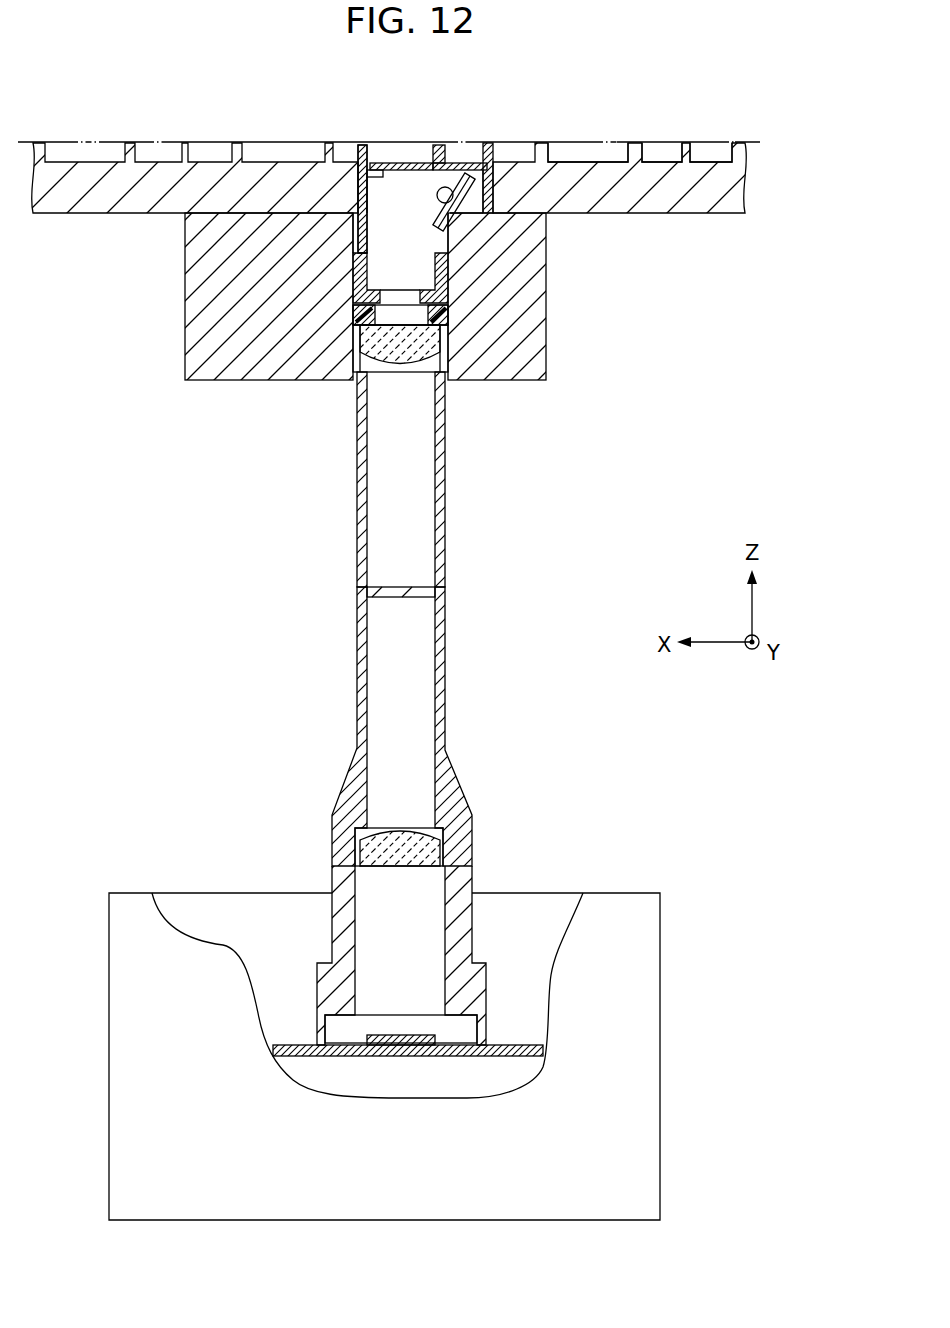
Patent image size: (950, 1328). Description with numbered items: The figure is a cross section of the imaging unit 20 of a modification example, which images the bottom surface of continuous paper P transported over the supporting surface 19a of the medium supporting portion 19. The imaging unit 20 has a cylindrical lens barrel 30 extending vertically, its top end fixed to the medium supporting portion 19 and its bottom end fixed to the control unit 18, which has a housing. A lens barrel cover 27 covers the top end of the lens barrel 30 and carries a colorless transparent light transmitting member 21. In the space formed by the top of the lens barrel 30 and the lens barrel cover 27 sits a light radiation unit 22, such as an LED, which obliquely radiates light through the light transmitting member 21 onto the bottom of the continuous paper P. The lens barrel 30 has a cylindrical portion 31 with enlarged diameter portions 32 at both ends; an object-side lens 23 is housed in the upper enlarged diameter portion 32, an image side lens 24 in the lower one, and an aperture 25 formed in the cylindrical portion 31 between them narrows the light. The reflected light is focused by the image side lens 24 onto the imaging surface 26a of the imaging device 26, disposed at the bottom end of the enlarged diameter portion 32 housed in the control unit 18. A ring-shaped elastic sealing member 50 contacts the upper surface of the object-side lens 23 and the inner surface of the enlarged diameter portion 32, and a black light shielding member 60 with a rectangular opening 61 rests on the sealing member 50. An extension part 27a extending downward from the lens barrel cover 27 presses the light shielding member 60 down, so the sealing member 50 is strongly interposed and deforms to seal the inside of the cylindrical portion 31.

The continuous paper P is at (98, 142).
The control unit 18 is at (115, 1035).
The medium supporting portion 19 is at (724, 240).
The supporting surface 19a is at (637, 142).
The imaging unit 20 is at (268, 593).
The light transmitting member 21 is at (390, 163).
The light radiation unit 22 is at (438, 195).
The object-side lens 23 is at (432, 345).
The image side lens 24 is at (402, 835).
The aperture 25 is at (393, 590).
The imaging device 26 is at (448, 1056).
The imaging surface 26a is at (375, 1035).
The lens barrel cover 27 is at (462, 130).
The extension part 27a is at (360, 240).
The lens barrel 30 is at (445, 628).
The cylindrical portion 31 is at (445, 508).
The enlarged diameter portion 32 is at (465, 928).
The sealing member 50 is at (350, 307).
The light shielding member 60 is at (345, 322).
The opening 61 is at (435, 290).